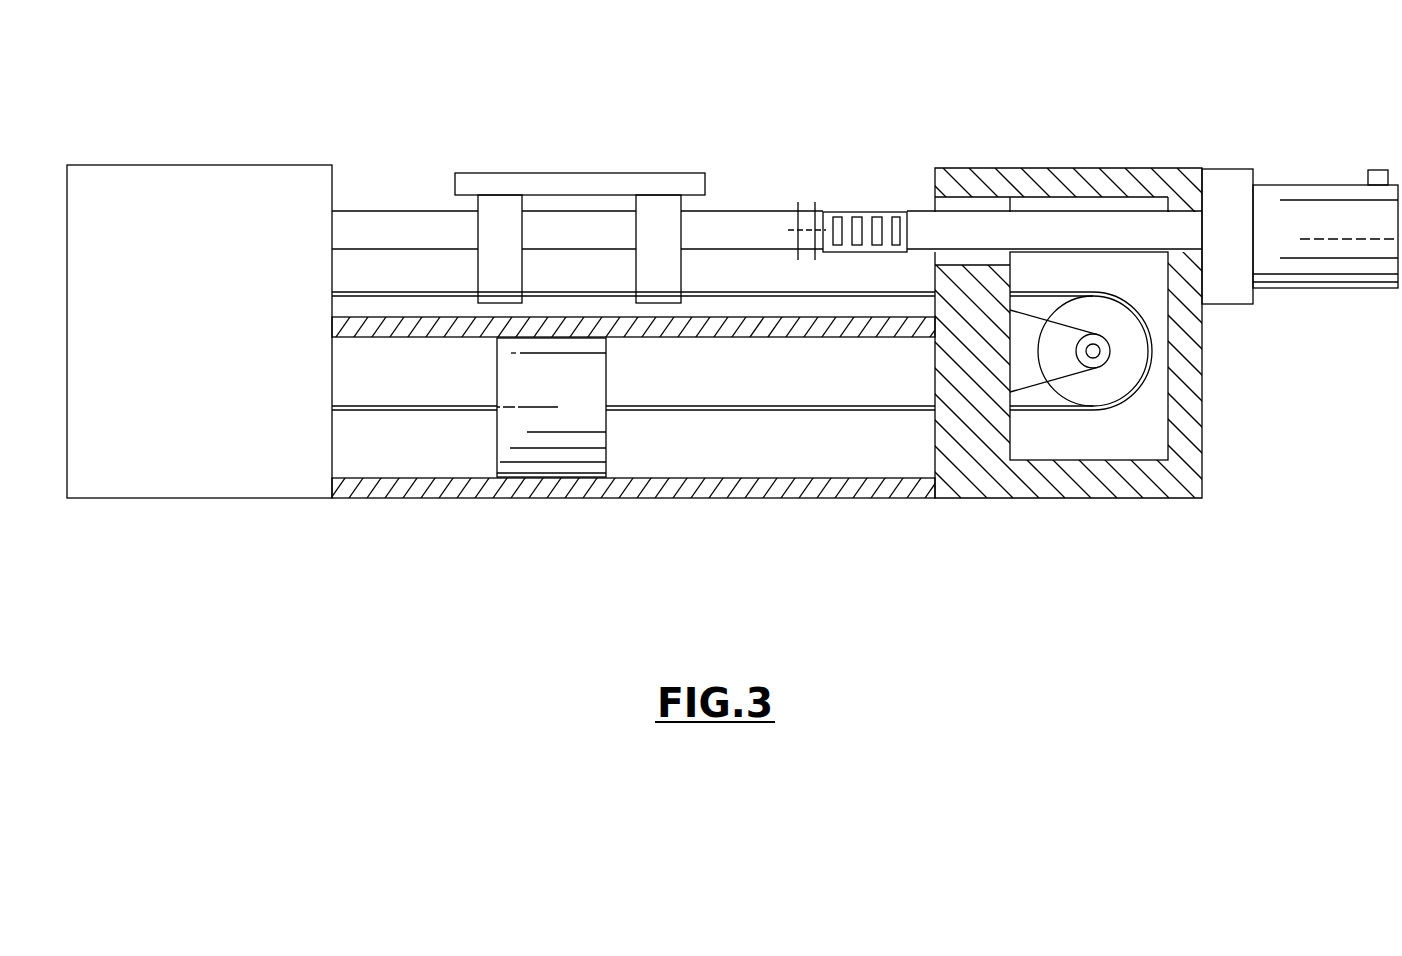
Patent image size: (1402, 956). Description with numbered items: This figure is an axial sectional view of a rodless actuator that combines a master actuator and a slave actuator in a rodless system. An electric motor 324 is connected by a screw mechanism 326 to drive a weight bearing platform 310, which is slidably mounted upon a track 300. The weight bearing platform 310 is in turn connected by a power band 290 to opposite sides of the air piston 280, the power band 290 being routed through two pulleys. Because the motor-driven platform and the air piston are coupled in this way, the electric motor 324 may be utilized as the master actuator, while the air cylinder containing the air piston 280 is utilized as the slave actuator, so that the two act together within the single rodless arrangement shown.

The track 300 is at (408, 210).
The weight bearing platform 310 is at (653, 173).
The screw mechanism 326 is at (842, 213).
The electric motor 324 is at (1335, 223).
The air piston 280 is at (552, 422).
The power band 290 is at (805, 408).